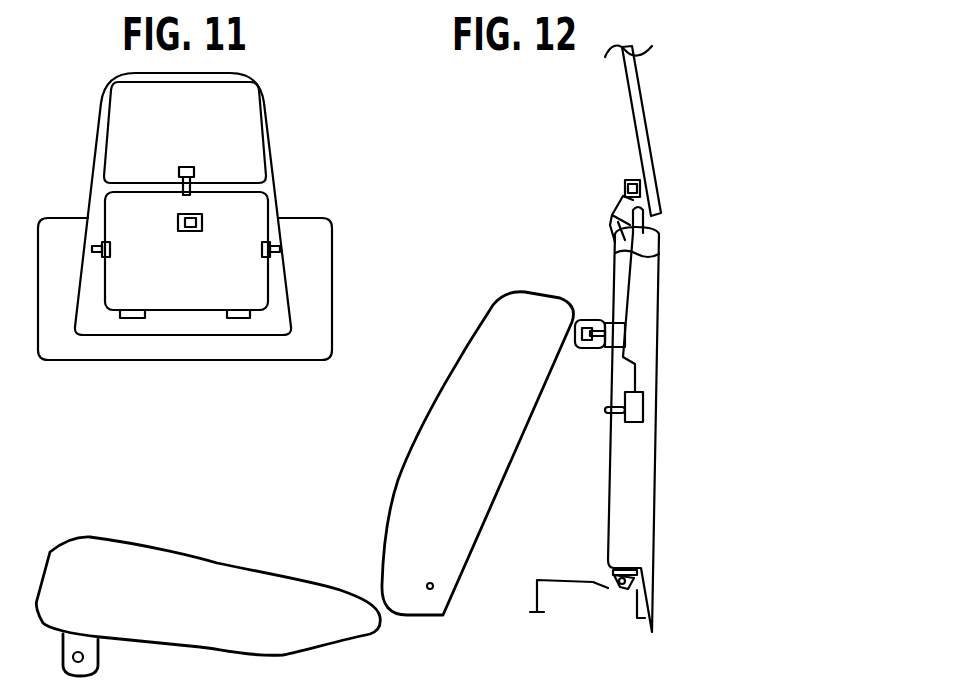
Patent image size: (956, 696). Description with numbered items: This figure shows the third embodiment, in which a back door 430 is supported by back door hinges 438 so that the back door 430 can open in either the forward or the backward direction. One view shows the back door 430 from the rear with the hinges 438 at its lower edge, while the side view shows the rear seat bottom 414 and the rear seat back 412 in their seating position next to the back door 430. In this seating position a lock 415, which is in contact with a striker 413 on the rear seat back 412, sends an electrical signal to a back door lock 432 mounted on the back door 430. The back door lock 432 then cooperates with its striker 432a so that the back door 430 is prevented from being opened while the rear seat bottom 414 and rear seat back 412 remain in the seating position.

In FIG. 12, the rear seat back 412 is at (464, 572).
In FIG. 12, the striker 413 is at (575, 320).
In FIG. 12, the rear seat bottom 414 is at (43, 572).
In FIG. 12, the lock 415 is at (625, 334).
In FIG. 11, the back door 430 is at (258, 202).
In FIG. 12, the back door 430 is at (656, 468).
In FIG. 11, the back door lock 432 is at (106, 242).
In FIG. 12, the back door lock 432 is at (643, 406).
In FIG. 11, the striker 432a is at (268, 256).
In FIG. 12, the striker 432a is at (600, 409).
In FIG. 11, the back door hinges 438 is at (237, 319).
In FIG. 12, the back door hinges 438 is at (642, 570).